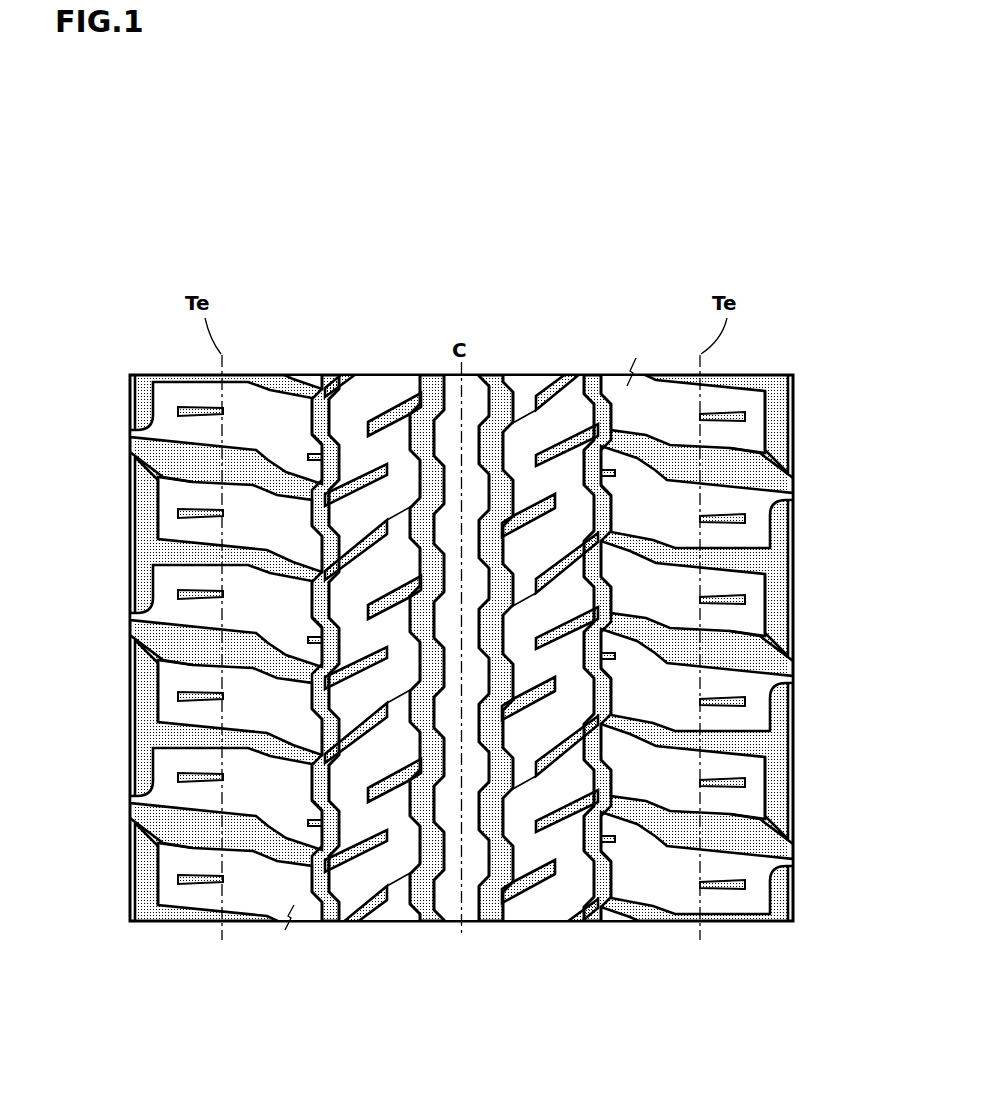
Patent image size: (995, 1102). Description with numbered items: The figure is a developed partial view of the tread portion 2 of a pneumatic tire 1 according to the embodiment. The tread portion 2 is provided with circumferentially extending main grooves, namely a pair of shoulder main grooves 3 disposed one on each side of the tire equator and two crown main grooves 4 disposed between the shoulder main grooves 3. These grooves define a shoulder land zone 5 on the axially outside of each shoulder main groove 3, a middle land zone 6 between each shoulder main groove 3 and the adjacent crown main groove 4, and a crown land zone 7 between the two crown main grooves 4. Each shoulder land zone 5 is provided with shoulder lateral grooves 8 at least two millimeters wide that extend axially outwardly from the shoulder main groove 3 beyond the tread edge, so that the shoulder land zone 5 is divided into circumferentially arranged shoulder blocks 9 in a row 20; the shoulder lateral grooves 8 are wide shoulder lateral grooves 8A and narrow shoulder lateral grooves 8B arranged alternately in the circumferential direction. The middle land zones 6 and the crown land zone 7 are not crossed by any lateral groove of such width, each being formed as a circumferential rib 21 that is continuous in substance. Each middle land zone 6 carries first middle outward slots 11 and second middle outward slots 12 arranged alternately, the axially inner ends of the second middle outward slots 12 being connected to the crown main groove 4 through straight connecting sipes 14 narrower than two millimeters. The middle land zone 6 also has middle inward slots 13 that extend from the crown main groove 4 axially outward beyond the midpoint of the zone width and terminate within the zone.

The tire 1 is at (442, 648).
The tread portion 2 is at (442, 648).
The shoulder main groove 3 is at (329, 372).
The crown main groove 4 is at (426, 372).
The shoulder land zone 5 is at (442, 648).
The middle land zone 6 is at (461, 648).
The crown land zone 7 is at (451, 370).
The shoulder lateral groove 8 is at (442, 648).
The wide shoulder lateral groove 8A is at (255, 645).
The narrow shoulder lateral groove 8B is at (255, 552).
The shoulder block 9 is at (277, 618).
The first middle outward slot 11 is at (363, 840).
The second middle outward slot 12 is at (386, 892).
The middle inward slot 13 is at (388, 789).
The connecting sipe 14 is at (398, 884).
The row 20 is at (442, 648).
The circumferential rib 21 is at (461, 648).